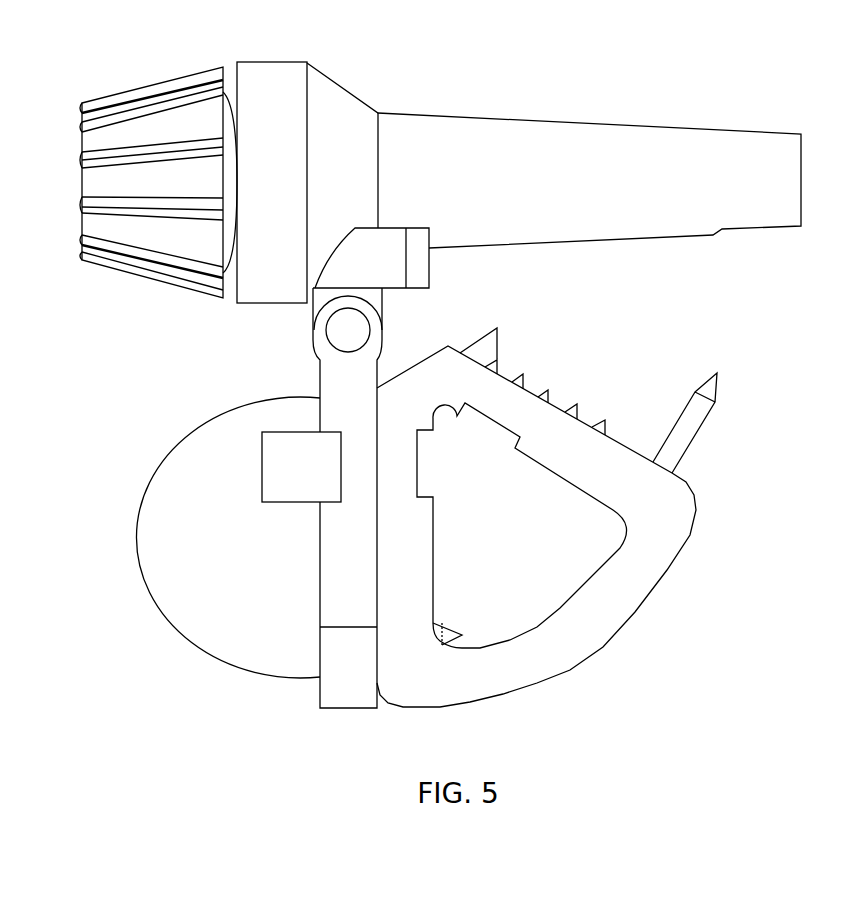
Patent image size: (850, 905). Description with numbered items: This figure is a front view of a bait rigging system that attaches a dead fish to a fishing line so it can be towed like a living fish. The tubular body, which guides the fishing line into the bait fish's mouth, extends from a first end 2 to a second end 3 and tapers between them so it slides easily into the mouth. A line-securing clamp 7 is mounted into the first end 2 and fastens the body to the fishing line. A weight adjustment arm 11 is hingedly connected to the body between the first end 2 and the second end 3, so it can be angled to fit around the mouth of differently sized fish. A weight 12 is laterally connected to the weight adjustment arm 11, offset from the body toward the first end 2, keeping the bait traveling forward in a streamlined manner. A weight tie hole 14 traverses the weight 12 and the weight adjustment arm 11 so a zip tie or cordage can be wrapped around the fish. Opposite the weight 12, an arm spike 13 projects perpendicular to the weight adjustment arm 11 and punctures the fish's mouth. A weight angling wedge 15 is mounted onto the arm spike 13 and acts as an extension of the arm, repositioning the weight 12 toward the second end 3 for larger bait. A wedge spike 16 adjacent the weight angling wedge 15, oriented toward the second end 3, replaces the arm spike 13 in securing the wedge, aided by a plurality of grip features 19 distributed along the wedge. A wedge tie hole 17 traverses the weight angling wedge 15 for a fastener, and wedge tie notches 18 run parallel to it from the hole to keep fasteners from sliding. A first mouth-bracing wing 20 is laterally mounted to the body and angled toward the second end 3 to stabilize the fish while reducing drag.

The first end 2 is at (230, 301).
The second end 3 is at (806, 148).
The line-securing clamp 7 is at (145, 92).
The weight adjustment arm 11 is at (322, 559).
The weight 12 is at (203, 638).
The arm spike 13 is at (447, 630).
The weight tie hole 14 is at (270, 475).
The weight angling wedge 15 is at (652, 587).
The wedge spike 16 is at (482, 343).
The wedge tie hole 17 is at (609, 533).
The wedge tie notch 18 is at (484, 436).
The grip features 19 is at (522, 378).
The first mouth-bracing wing 20 is at (397, 233).